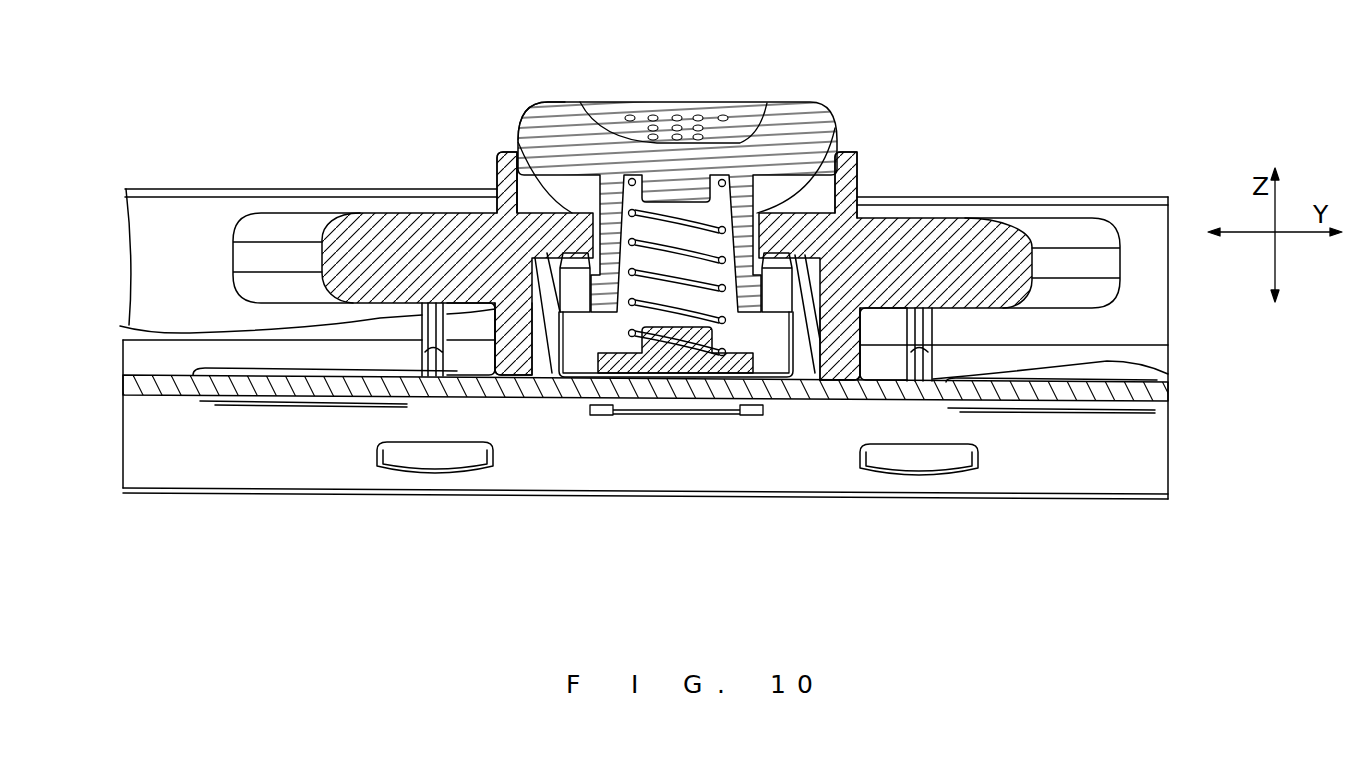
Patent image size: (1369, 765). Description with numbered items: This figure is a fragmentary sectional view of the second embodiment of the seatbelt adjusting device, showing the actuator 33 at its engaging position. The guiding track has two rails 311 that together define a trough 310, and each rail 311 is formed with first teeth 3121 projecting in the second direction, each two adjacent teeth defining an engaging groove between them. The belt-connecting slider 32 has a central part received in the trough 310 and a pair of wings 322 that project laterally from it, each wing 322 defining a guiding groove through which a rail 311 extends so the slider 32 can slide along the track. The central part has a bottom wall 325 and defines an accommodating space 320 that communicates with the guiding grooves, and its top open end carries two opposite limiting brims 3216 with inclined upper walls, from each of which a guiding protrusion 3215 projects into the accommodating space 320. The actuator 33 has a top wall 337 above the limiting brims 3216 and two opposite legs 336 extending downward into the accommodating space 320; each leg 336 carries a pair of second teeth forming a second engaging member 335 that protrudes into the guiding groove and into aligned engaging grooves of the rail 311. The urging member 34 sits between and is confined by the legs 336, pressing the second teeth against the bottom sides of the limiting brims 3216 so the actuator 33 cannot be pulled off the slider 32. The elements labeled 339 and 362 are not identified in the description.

The belt-connecting slider 32 is at (985, 214).
The actuator 33 is at (609, 99).
The urging member 34 is at (693, 253).
The trough 310 is at (780, 347).
The rails 311 is at (547, 330).
The accommodating space 320 is at (725, 305).
The wings 322 is at (502, 357).
The bottom wall 325 is at (640, 415).
The second engaging member 335 is at (549, 250).
The legs 336 is at (750, 212).
The top wall 337 is at (550, 101).
The guide plate 339 is at (576, 340).
The recess 362 is at (568, 213).
The first teeth 3121 is at (530, 260).
The guiding protrusion 3215 is at (517, 150).
The limiting brims 3216 is at (497, 177).